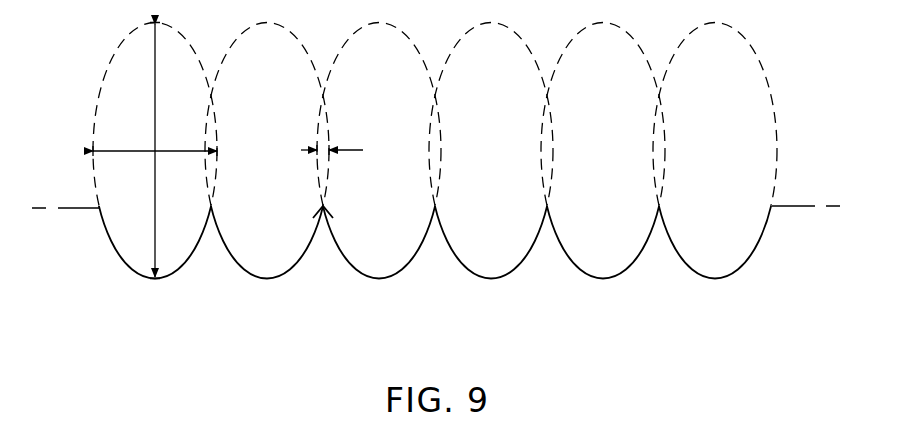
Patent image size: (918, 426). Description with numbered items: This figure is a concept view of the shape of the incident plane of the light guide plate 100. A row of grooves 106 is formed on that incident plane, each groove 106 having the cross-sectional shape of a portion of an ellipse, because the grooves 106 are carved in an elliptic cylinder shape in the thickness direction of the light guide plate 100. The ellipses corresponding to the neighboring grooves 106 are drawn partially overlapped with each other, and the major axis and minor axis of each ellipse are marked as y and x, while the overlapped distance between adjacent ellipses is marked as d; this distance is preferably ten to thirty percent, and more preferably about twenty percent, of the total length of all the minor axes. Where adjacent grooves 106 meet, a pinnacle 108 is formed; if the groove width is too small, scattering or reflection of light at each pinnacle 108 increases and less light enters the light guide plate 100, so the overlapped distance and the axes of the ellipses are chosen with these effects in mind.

The light guide plate 100 is at (786, 245).
The grooves 106 is at (571, 260).
The pinnacle 108 is at (323, 209).